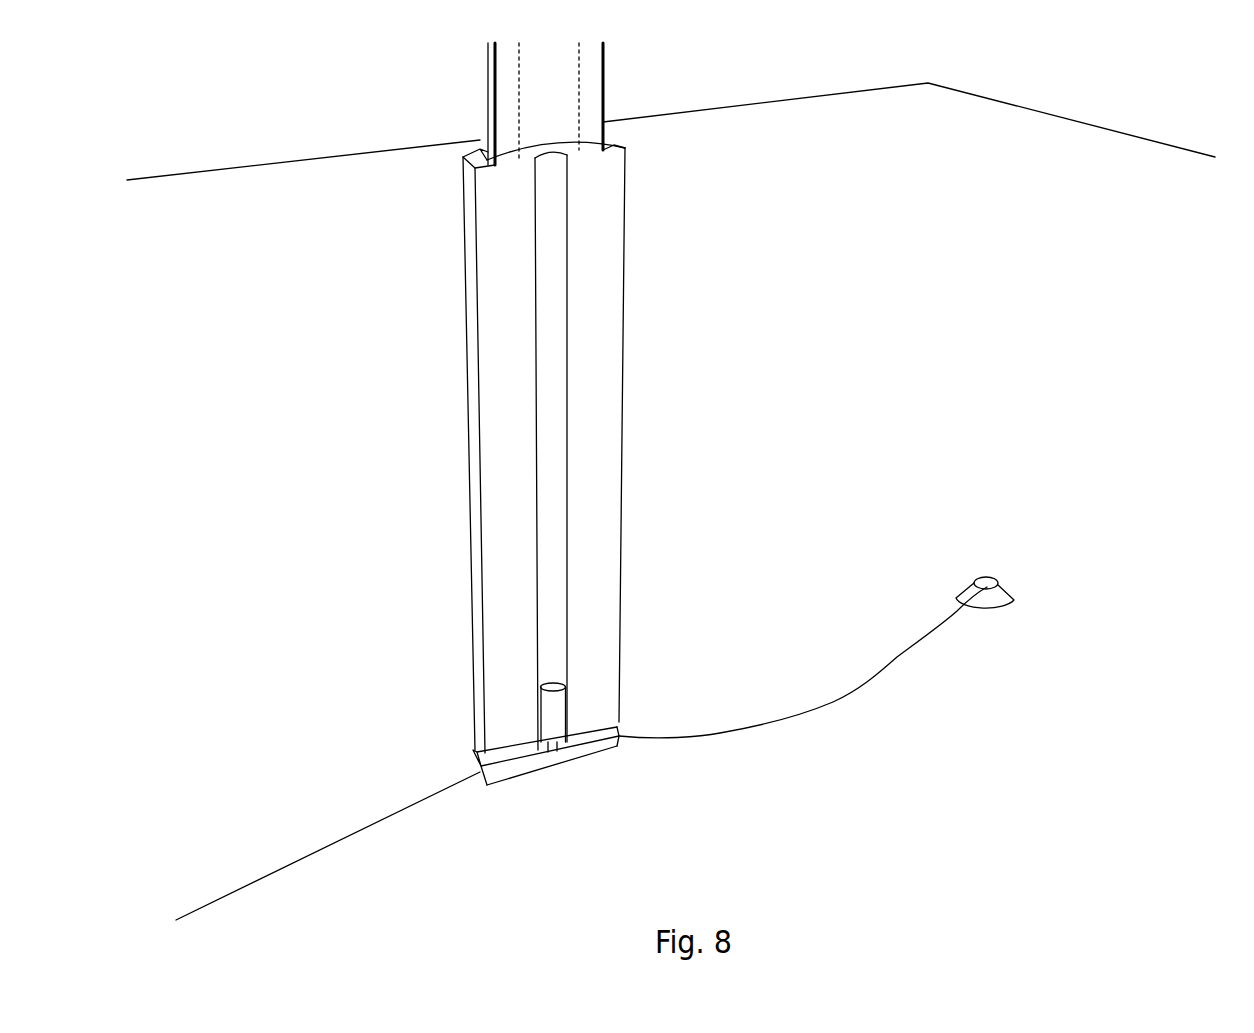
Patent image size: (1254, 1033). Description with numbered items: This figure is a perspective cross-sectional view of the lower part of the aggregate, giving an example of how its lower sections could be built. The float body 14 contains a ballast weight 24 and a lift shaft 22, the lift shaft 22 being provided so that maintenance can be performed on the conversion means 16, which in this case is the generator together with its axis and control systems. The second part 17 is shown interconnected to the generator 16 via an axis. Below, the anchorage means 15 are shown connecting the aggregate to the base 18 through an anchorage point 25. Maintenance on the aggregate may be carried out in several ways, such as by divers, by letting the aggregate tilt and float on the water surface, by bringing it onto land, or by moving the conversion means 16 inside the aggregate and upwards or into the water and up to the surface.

The float body 14 is at (558, 107).
The anchorage means 15 is at (302, 862).
The conversion means 16 is at (553, 710).
The second part 17 is at (560, 760).
The base 18 is at (287, 680).
The lift shaft 22 is at (552, 354).
The ballast weight 24 is at (592, 452).
The anchorage point 25 is at (1002, 600).